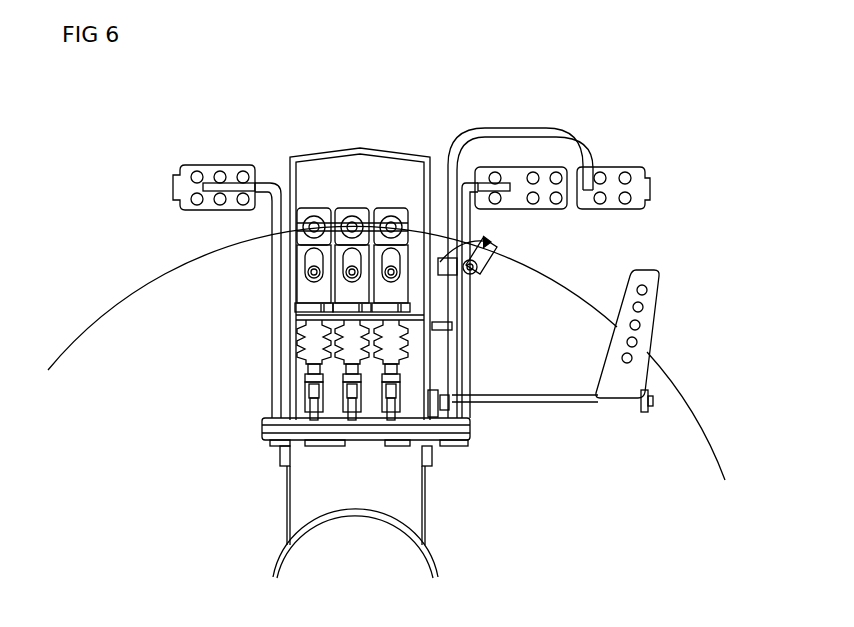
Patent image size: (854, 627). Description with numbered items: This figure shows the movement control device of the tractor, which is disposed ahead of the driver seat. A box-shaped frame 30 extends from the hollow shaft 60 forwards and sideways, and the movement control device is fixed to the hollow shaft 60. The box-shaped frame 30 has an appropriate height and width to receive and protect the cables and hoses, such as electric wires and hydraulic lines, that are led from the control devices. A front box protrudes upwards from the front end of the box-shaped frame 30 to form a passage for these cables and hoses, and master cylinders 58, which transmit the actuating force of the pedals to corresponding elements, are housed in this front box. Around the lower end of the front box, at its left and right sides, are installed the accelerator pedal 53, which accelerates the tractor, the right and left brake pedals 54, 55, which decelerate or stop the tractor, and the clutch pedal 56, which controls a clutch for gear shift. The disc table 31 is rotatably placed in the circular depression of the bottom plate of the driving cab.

The box-shaped frame 30 is at (428, 500).
The disc table 31 is at (690, 428).
The accelerator pedal 53 is at (664, 302).
The brake pedal 54 is at (612, 178).
The brake pedal 55 is at (516, 175).
The clutch pedal 56 is at (207, 172).
The master cylinder 58 is at (300, 328).
The hollow shaft 60 is at (438, 549).